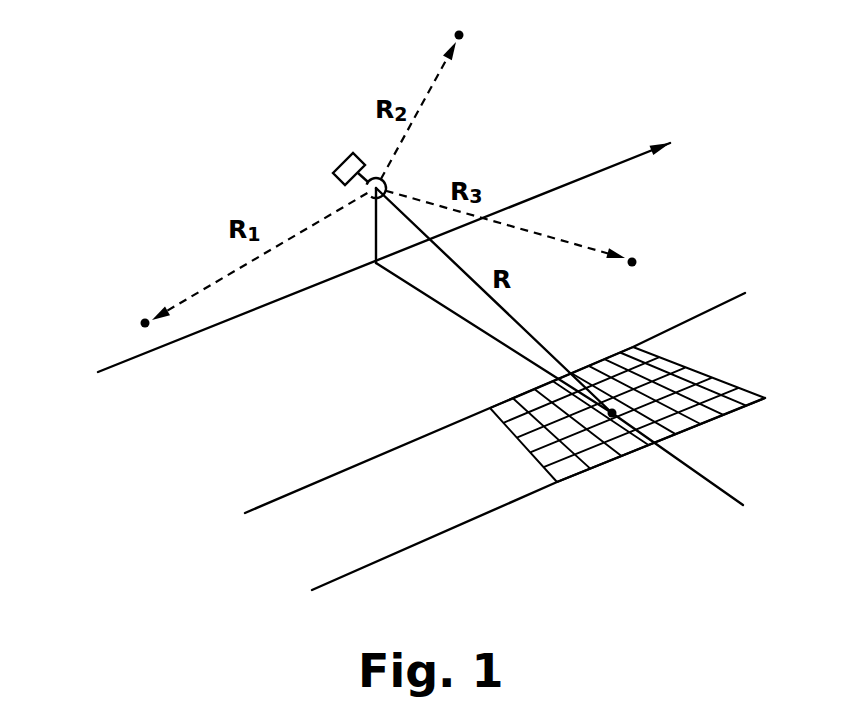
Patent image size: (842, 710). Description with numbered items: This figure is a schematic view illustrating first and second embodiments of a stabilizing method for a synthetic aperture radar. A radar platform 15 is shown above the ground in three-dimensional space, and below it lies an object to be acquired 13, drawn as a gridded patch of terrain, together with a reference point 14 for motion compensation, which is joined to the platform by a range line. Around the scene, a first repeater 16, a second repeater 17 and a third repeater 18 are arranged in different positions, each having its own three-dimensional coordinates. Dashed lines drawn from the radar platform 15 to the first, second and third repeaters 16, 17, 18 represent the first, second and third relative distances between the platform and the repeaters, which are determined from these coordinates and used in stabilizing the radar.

The object to be acquired 13 is at (587, 475).
The reference point for motion compensation 14 is at (617, 414).
The radar platform 15 is at (342, 160).
The first repeater 16 is at (140, 325).
The second repeater 17 is at (462, 38).
The third repeater 18 is at (630, 266).